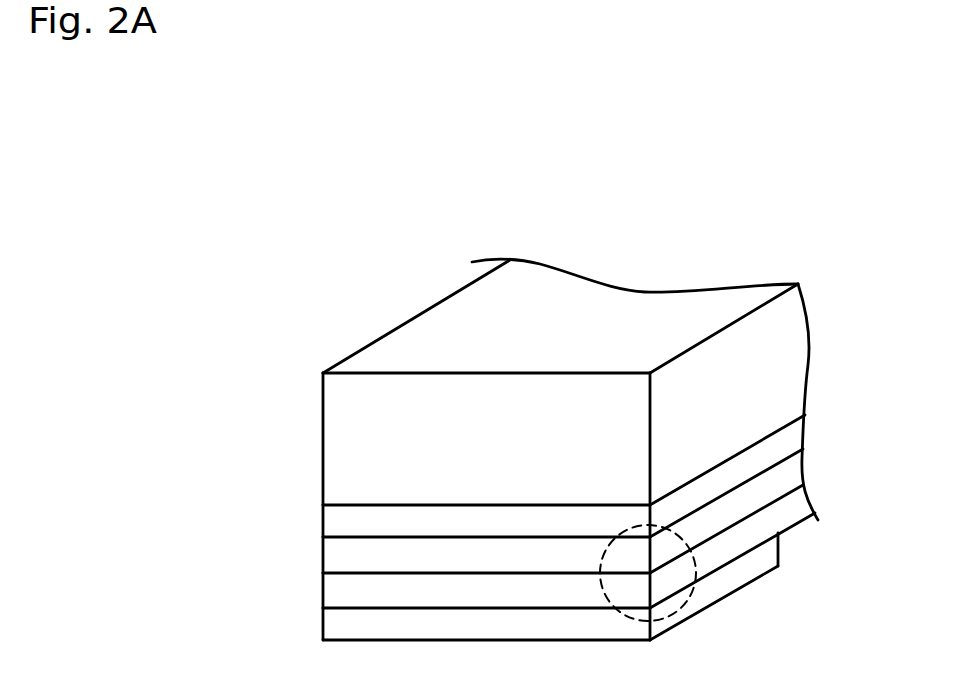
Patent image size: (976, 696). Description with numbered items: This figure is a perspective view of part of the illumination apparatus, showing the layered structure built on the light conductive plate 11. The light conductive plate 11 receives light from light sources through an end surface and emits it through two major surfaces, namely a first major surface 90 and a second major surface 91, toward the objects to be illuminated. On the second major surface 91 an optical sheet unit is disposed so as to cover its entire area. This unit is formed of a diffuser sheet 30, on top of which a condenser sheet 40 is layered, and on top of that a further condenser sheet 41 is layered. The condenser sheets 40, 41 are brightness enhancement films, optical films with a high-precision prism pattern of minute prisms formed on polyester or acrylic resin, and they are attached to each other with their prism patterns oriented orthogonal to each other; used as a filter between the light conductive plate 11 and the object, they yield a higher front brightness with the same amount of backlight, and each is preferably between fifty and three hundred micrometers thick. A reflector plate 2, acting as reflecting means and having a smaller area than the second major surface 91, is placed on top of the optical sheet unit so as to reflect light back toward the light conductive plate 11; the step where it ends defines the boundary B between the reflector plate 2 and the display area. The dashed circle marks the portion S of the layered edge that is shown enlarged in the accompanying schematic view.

The light conductive plate 11 is at (548, 432).
The first major surface 90 is at (413, 373).
The second major surface 91 is at (377, 504).
The diffuser sheet 30 is at (352, 522).
The condenser sheet 40 is at (350, 562).
The condenser sheet 41 is at (345, 590).
The reflector plate 2 is at (348, 627).
The boundary B is at (785, 537).
The portion S is at (688, 602).